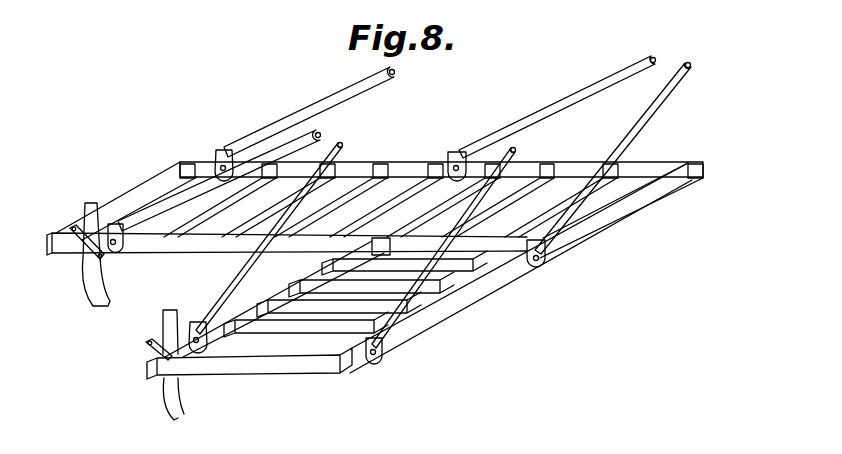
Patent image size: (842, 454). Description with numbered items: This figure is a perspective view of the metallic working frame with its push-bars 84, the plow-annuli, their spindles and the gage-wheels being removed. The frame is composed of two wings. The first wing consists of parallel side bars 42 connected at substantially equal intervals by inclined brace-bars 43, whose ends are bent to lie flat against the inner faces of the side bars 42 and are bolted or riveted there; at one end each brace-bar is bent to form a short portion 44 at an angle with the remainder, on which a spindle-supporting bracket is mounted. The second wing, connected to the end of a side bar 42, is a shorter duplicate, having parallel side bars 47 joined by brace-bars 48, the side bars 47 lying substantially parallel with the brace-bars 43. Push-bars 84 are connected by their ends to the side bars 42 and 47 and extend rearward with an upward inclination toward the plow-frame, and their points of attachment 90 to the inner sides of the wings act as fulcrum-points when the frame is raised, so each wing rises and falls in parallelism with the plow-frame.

The side bars 42 is at (425, 166).
The brace-bars 43 is at (396, 199).
The bent portion of brace-bar 44 is at (538, 186).
The side bars 47 is at (268, 300).
The brace-bars 48 is at (317, 315).
The push-bars 84 is at (286, 120).
The points of attachment 90 is at (135, 311).